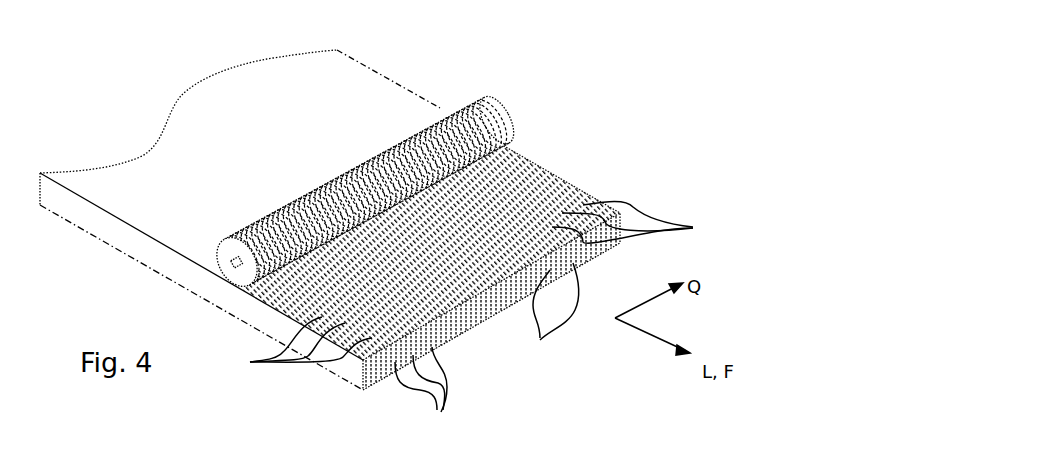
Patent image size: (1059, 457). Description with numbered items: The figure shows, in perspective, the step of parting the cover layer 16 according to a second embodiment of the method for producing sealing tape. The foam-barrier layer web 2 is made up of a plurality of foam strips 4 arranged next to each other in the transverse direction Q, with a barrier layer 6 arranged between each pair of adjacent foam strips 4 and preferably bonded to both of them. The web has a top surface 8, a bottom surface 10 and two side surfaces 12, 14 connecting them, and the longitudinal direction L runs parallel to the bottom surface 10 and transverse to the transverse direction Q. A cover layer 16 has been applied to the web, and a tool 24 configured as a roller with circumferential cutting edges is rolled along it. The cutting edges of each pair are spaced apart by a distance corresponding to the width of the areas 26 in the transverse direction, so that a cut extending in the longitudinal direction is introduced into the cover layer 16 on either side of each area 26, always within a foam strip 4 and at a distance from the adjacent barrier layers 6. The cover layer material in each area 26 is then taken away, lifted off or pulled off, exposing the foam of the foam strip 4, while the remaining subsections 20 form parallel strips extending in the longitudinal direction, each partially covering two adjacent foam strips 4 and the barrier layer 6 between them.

The foam-barrier layer web 2 is at (420, 84).
The foam strip 4 is at (491, 291).
The barrier layer 6 is at (491, 301).
The top surface 8 is at (242, 132).
The bottom surface 10 is at (88, 230).
The side surface 12 is at (82, 210).
The side surface 14 is at (577, 185).
The cover layer 16 is at (317, 80).
The subsection of cover layer 20 is at (252, 362).
The tool 24 is at (497, 122).
The area of removed cover layer 26 is at (638, 222).